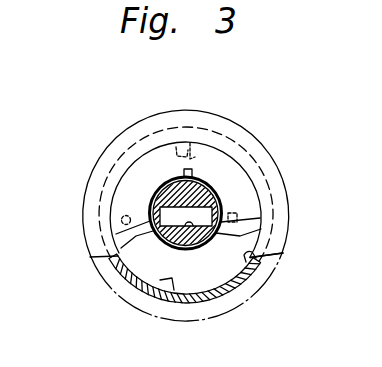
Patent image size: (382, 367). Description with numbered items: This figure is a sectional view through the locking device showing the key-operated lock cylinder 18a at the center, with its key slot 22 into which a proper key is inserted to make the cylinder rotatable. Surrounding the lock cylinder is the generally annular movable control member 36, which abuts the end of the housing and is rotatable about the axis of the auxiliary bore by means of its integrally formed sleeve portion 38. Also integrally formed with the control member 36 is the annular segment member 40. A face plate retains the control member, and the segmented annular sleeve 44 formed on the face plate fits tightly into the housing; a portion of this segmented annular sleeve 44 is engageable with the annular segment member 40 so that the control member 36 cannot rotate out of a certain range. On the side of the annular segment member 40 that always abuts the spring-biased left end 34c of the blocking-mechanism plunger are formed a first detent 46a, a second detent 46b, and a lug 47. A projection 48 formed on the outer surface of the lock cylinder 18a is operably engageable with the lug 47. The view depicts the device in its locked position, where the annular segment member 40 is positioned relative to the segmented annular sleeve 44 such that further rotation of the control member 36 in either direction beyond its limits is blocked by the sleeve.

The lock cylinder 18a is at (283, 253).
The key slot 22 is at (177, 246).
The left end of the plunger 34c is at (190, 143).
The control member 36 is at (227, 114).
The sleeve portion 38 is at (249, 267).
The annular segment member 40 is at (158, 186).
The segmented annular sleeve 44 is at (173, 288).
The first detent 46a is at (176, 147).
The second detent 46b is at (121, 222).
The lug 47 is at (237, 214).
The projection 48 is at (193, 172).